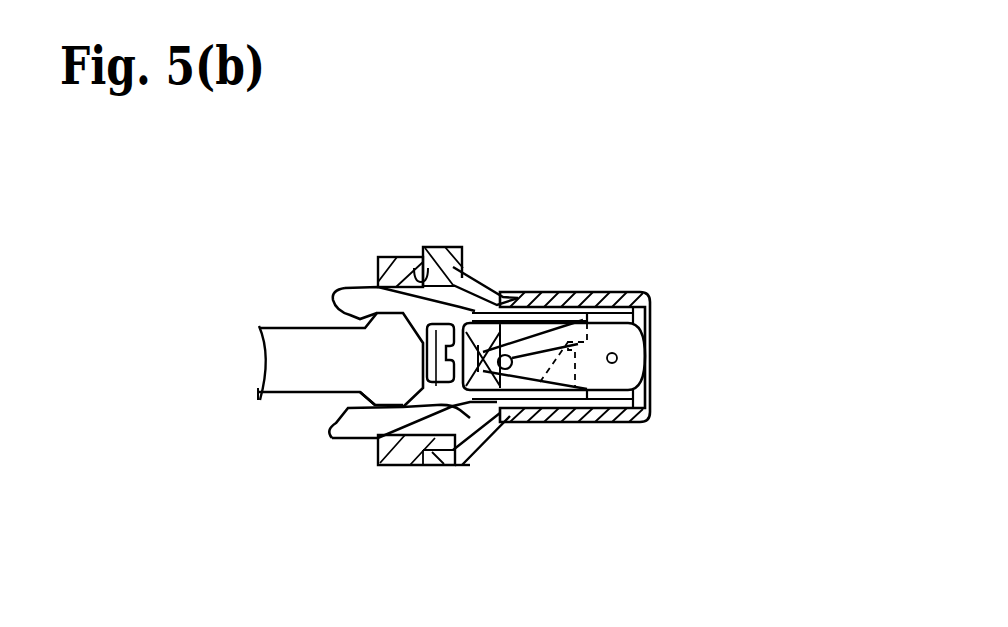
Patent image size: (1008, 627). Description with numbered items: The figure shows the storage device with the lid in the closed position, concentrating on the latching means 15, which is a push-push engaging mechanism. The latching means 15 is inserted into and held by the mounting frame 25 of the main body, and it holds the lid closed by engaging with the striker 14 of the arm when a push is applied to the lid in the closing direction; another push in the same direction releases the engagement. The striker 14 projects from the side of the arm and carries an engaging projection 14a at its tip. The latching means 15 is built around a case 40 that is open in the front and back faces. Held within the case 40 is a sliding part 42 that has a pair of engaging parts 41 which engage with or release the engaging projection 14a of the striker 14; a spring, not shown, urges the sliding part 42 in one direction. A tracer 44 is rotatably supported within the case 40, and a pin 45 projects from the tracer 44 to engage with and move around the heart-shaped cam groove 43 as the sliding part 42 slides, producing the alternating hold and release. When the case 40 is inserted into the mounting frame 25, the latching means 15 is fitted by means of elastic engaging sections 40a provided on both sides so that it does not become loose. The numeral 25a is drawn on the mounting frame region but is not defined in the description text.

The striker 14 is at (282, 380).
The engaging projection 14a is at (385, 393).
The latching means 15 is at (677, 288).
The mounting frame 25 is at (442, 468).
The upper hatched block 25a is at (423, 272).
The case 40 is at (610, 294).
The elastic engaging sections 40a is at (470, 268).
The engaging parts 41 is at (340, 291).
The sliding part 42 is at (463, 387).
The heart-shaped cam groove 43 is at (522, 379).
The tracer 44 is at (640, 342).
The pin 45 is at (512, 354).